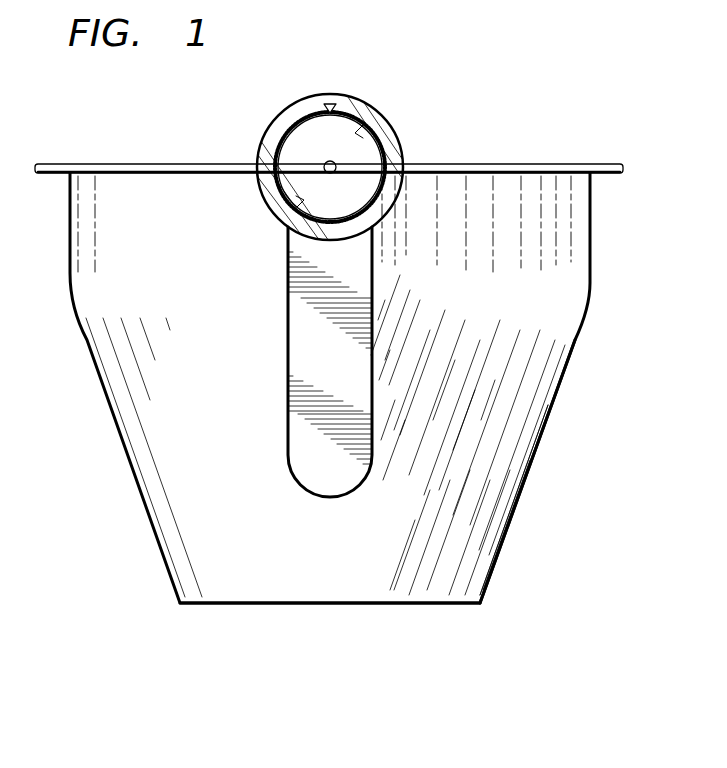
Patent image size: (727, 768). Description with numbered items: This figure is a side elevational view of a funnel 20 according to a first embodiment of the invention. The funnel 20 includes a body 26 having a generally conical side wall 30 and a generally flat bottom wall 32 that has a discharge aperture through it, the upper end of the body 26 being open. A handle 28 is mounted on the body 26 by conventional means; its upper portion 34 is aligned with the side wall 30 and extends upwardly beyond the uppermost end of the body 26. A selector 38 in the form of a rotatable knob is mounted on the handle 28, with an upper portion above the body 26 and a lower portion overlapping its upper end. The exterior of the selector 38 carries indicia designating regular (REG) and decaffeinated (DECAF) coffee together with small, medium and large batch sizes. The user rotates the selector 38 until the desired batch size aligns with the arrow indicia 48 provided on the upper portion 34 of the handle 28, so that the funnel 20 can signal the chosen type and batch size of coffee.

The funnel 20 is at (605, 263).
The body 26 is at (567, 378).
The handle 28 is at (278, 398).
The side wall 30 is at (506, 470).
The bottom wall 32 is at (212, 606).
The upper portion 34 is at (362, 99).
The selector 38 is at (380, 134).
The arrow indicia 48 is at (324, 102).